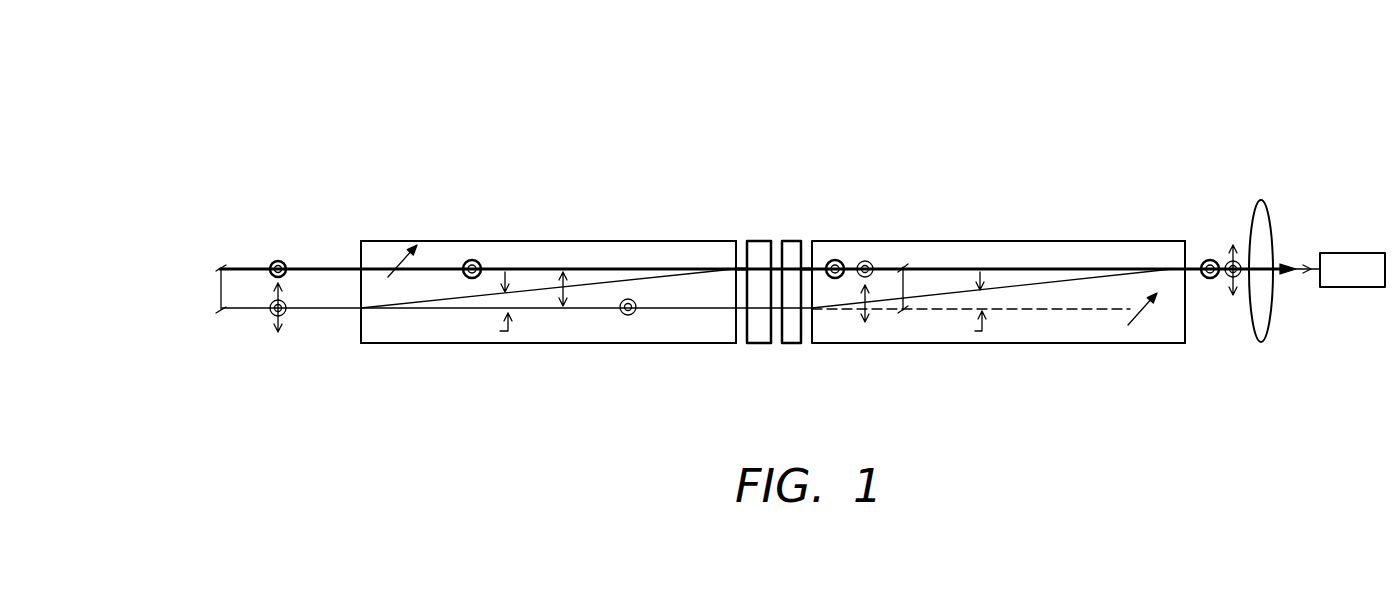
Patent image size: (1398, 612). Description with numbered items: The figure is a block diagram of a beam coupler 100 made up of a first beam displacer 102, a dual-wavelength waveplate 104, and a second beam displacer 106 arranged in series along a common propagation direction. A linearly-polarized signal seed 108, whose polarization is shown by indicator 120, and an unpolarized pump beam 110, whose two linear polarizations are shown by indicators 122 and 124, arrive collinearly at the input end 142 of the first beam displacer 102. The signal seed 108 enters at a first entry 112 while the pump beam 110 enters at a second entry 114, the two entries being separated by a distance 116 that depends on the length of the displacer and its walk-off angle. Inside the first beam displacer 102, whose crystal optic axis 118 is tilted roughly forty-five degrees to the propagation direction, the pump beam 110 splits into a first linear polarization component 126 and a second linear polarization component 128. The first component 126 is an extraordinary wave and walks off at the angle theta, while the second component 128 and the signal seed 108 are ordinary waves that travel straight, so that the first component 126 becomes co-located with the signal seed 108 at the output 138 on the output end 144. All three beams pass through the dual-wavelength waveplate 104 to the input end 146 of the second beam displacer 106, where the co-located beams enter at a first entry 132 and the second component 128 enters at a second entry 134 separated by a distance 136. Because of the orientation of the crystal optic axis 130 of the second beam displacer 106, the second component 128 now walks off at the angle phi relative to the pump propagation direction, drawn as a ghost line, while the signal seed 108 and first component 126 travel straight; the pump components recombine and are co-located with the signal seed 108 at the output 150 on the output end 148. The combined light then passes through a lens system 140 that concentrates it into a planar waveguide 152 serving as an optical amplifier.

The beam coupler 100 is at (820, 80).
The first beam displacer 102 is at (675, 240).
The dual-wavelength waveplate 104 is at (747, 360).
The second beam displacer 106 is at (1122, 239).
The linearly-polarized signal seed 108 is at (361, 308).
The unpolarized pump beam 110 is at (317, 309).
The first entry 112 is at (361, 268).
The second entry 114 is at (327, 268).
The distance 116 is at (221, 289).
The crystal optic axis 118 is at (452, 263).
The indicator 120 is at (270, 262).
The indicator 122 is at (277, 322).
The indicator 124 is at (272, 318).
The first linear polarization component 126 is at (613, 281).
The second linear polarization component 128 is at (615, 311).
The crystal optic axis 130 is at (1136, 317).
The first entry 132 is at (813, 270).
The second entry 134 is at (807, 342).
The distance 136 is at (905, 292).
The output 138 is at (741, 268).
The lens system 140 is at (1258, 203).
The input end 142 is at (361, 343).
The output end 144 is at (736, 343).
The input end 146 is at (803, 257).
The output end 148 is at (1185, 343).
The output 150 is at (1188, 265).
The planar waveguide 152 is at (1367, 252).